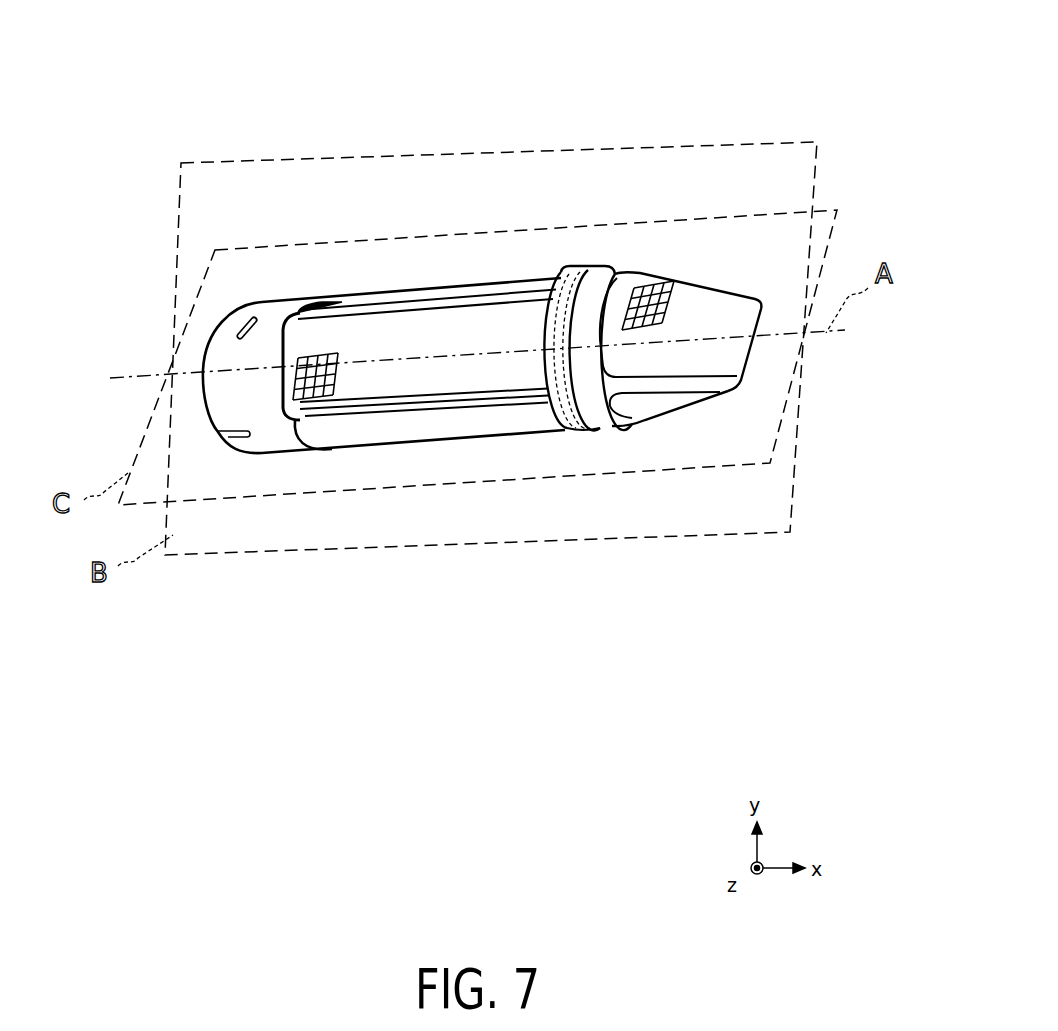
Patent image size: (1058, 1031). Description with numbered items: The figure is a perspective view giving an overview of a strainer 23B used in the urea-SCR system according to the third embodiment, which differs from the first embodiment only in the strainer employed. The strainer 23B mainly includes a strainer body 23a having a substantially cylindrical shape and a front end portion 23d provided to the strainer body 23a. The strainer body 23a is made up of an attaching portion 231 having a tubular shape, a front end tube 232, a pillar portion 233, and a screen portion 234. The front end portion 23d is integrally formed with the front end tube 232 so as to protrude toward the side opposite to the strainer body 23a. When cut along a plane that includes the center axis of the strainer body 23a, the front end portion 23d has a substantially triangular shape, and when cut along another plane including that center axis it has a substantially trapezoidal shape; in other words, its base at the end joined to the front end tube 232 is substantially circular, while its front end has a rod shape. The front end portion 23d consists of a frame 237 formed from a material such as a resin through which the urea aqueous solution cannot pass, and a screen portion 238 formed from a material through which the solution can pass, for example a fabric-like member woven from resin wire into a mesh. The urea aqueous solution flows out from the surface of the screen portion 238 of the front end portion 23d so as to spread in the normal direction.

The strainer 23B is at (654, 88).
The strainer body 23a is at (218, 307).
The attaching portion 231 is at (226, 351).
The front end tube 232 is at (575, 410).
The pillar portion 233 is at (440, 300).
The screen portion 234 is at (480, 287).
The frame 237 is at (601, 428).
The screen portion 238 is at (702, 352).
The front end portion 23d is at (782, 653).